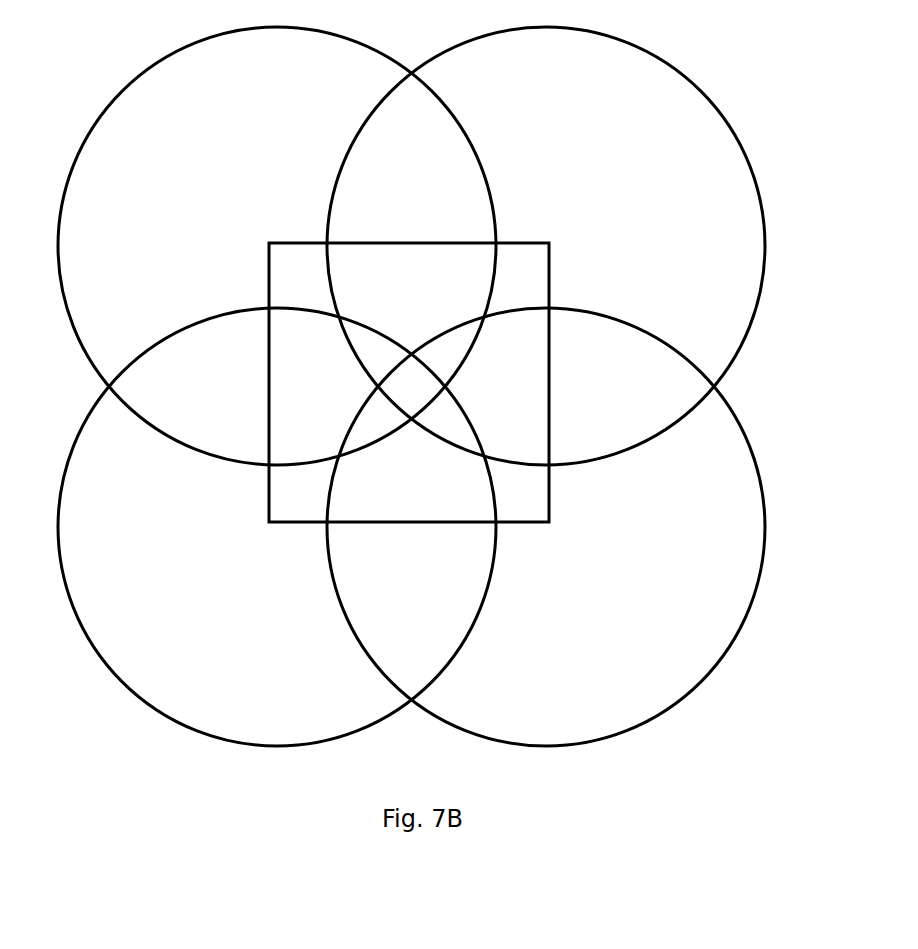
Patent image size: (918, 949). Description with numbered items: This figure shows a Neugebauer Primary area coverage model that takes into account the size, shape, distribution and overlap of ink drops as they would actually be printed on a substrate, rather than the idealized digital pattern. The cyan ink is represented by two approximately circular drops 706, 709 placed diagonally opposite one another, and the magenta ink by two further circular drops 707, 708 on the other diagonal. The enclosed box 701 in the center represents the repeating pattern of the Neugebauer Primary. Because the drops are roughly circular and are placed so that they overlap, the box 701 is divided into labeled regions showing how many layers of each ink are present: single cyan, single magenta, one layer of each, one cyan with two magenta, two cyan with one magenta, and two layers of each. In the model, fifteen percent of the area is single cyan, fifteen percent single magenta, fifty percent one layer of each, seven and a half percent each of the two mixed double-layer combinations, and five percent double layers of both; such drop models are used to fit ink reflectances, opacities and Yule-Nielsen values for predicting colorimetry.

The enclosed box 701 is at (439, 524).
The cyan drop 706 is at (90, 127).
The magenta drop 707 is at (732, 128).
The magenta drop 708 is at (60, 497).
The cyan drop 709 is at (763, 497).